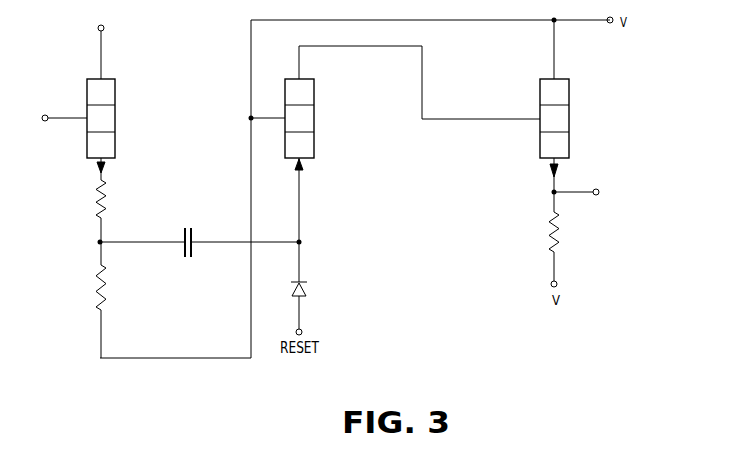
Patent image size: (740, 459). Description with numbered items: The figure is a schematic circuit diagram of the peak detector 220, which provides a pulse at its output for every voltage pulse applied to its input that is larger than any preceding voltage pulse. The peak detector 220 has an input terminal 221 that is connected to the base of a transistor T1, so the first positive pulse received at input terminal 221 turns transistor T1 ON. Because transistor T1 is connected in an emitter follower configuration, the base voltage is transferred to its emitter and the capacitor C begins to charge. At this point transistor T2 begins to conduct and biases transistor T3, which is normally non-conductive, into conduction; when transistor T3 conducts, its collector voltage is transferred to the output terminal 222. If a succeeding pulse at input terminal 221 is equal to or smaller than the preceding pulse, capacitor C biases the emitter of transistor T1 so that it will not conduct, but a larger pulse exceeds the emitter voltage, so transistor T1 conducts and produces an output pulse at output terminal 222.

The peak detector 220 is at (488, 168).
The input terminal 221 is at (45, 115).
The output terminal 222 is at (604, 203).
The transistor T1 is at (116, 121).
The transistor T2 is at (315, 120).
The transistor T3 is at (570, 120).
The capacitor C is at (193, 215).